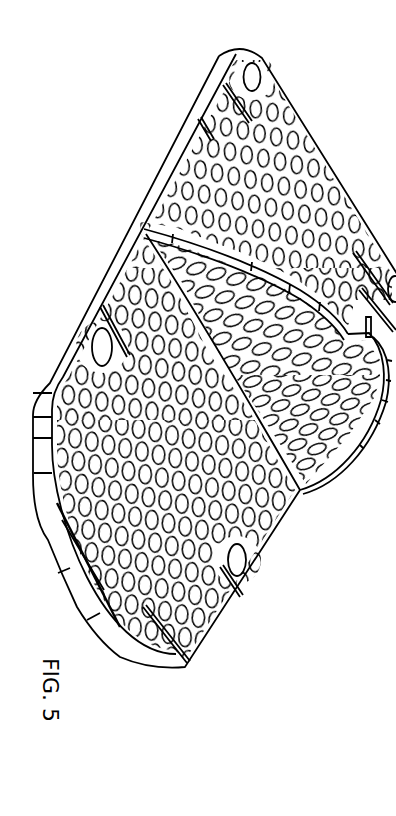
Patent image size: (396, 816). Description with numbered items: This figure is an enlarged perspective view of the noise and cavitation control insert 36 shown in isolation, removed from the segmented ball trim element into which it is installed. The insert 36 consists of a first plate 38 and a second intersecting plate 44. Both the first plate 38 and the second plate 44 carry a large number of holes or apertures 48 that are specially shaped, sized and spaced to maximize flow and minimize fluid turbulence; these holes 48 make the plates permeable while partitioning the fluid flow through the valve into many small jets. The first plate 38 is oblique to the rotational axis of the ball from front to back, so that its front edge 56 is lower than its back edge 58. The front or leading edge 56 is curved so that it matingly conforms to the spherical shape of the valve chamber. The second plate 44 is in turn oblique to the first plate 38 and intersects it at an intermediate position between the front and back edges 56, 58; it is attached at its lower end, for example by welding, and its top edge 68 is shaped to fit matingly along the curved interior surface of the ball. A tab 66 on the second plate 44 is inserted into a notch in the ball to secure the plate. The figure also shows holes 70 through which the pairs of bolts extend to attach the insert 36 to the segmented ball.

The noise and cavitation control insert 36 is at (283, 550).
The first plate 38 is at (199, 652).
The second intersecting plate 44 is at (352, 445).
The holes or apertures 48 is at (273, 503).
The front edge 56 is at (185, 662).
The back edge 58 is at (309, 140).
The tab 66 is at (348, 262).
The top edge 68 is at (325, 252).
The holes 70 is at (243, 82).